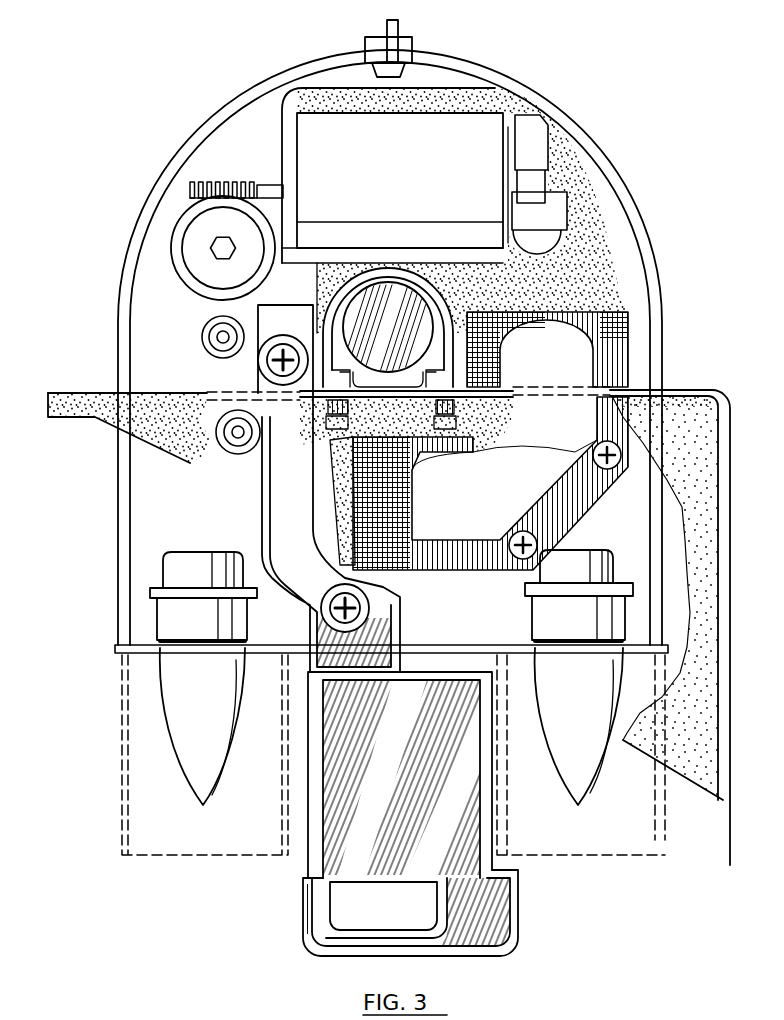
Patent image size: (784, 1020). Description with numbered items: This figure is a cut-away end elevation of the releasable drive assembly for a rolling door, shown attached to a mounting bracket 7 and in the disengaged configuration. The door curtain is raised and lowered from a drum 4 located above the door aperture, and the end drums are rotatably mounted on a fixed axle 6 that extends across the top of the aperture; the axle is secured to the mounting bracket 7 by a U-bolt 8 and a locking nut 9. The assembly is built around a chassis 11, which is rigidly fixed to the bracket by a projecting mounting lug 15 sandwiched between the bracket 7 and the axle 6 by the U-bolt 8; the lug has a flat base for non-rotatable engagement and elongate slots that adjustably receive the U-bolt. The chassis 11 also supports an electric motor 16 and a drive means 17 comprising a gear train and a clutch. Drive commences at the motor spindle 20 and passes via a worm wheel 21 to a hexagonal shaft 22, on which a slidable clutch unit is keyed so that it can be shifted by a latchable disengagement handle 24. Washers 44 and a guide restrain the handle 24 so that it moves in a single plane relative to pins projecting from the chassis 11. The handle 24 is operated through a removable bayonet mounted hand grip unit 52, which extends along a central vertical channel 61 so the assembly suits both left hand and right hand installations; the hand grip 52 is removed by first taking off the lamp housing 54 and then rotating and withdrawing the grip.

The drum 4 is at (238, 540).
The fixed axle 6 is at (400, 298).
The mounting bracket 7 is at (668, 407).
The U-bolt 8 is at (362, 280).
The locking nut 9 is at (470, 418).
The chassis 11 is at (615, 218).
The mounting lug 15 is at (460, 373).
The electric motor 16 is at (487, 122).
The drive means 17 is at (210, 221).
The motor spindle 20 is at (208, 178).
The worm wheel 21 is at (202, 270).
The hexagonal shaft 22 is at (215, 249).
The latchable disengagement handle 24 is at (490, 918).
The washers 44 is at (258, 360).
The hand grip unit 52 is at (347, 943).
The lamp housing 54 is at (147, 820).
The central vertical channel 61 is at (493, 790).